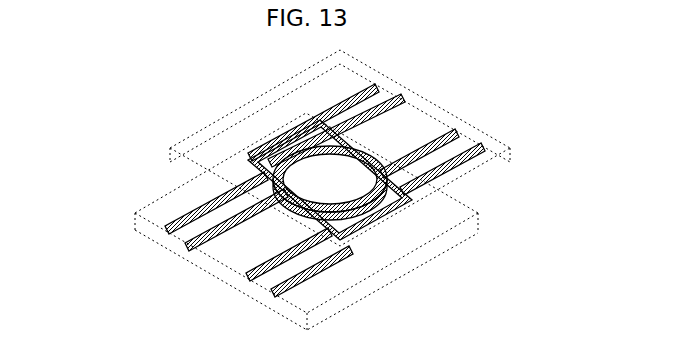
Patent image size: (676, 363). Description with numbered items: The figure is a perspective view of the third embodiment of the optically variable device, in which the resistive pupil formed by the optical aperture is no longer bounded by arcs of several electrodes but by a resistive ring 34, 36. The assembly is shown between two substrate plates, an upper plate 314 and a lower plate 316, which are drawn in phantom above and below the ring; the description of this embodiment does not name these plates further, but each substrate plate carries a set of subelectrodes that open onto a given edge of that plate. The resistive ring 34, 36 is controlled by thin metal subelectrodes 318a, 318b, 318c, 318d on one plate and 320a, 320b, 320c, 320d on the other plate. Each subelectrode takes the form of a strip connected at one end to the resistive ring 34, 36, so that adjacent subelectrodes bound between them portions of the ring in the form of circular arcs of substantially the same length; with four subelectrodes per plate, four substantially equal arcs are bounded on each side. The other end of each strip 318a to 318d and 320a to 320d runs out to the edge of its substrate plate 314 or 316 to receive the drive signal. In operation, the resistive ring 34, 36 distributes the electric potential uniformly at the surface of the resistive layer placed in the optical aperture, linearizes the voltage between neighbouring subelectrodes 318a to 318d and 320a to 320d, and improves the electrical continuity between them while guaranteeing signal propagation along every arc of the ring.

The resistive ring 34 is at (268, 175).
The resistive ring 36 is at (178, 213).
The top plate 314 is at (353, 70).
The bottom plate 316 is at (442, 245).
The thin metal subelectrode 318a is at (473, 148).
The thin metal subelectrode 318b is at (452, 133).
The thin metal subelectrode 318c is at (397, 90).
The thin metal subelectrode 318d is at (390, 82).
The thin metal subelectrode 320a is at (273, 293).
The thin metal subelectrode 320b is at (248, 277).
The thin metal subelectrode 320c is at (187, 247).
The thin metal subelectrode 320d is at (167, 230).